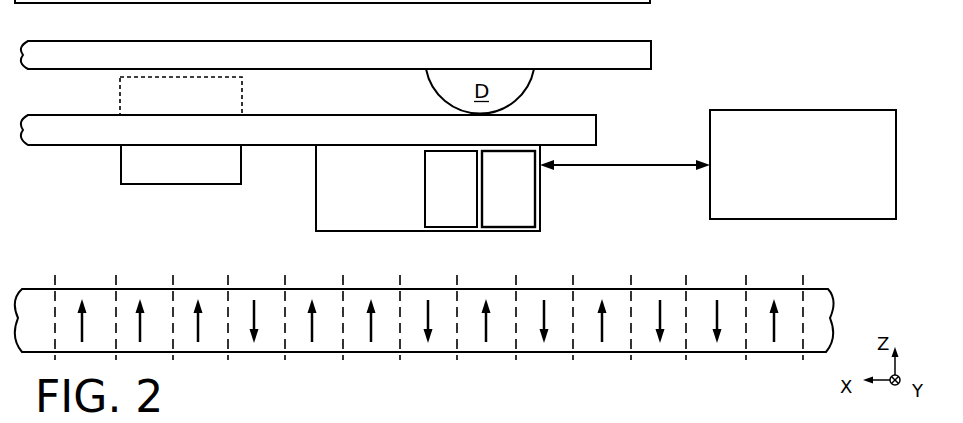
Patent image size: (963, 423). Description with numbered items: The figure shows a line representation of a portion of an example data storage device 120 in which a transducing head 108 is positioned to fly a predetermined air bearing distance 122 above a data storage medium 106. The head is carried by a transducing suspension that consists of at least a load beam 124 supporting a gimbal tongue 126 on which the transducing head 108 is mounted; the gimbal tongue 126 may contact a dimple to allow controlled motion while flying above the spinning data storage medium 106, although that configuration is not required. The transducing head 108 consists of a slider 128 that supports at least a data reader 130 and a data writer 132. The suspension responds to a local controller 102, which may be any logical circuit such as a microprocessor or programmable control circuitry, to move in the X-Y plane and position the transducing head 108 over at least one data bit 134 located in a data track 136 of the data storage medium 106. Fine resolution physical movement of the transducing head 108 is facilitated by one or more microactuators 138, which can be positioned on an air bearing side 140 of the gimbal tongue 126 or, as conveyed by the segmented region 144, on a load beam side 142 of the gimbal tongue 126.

The data storage device 120 is at (814, 37).
The load beam 124 is at (68, 66).
The segmented region 144 is at (201, 106).
The load beam side 142 is at (285, 96).
The gimbal tongue 126 is at (68, 138).
The microactuator 138 is at (201, 174).
The air bearing side 140 is at (88, 152).
The transducing head 108 is at (309, 198).
The data reader 130 is at (470, 198).
The data writer 132 is at (527, 198).
The slider 128 is at (541, 199).
The air bearing distance 122 is at (376, 284).
The local controller 102 is at (893, 134).
The data storage medium 106 is at (822, 292).
The data bit 134 is at (658, 300).
The data track 136 is at (251, 374).